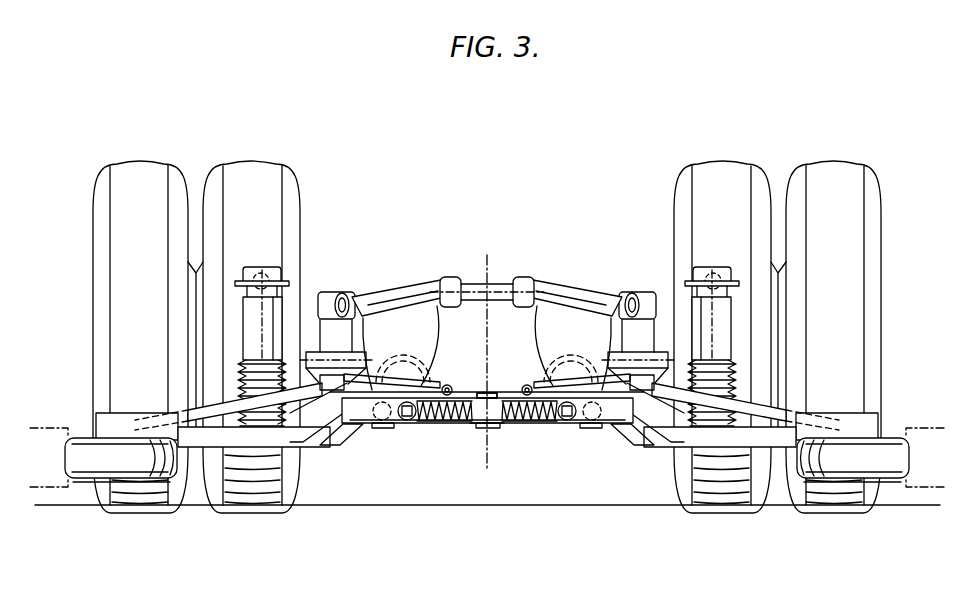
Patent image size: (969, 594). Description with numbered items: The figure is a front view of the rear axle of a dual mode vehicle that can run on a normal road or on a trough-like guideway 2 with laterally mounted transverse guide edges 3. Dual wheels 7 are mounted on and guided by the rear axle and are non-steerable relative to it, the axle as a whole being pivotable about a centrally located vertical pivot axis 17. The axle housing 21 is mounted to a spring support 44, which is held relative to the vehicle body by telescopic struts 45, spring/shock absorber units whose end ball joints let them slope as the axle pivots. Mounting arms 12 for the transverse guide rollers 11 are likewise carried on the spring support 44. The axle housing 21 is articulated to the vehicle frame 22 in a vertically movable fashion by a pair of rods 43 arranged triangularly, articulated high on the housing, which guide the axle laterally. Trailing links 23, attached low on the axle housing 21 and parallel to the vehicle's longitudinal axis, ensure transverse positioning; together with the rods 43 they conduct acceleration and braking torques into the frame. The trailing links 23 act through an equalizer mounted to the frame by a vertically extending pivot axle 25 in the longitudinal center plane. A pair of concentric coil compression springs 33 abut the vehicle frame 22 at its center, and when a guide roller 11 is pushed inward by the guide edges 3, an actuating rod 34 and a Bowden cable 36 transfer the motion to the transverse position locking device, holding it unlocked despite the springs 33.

The guideway 2 is at (565, 496).
The transverse guide edges 3 is at (62, 423).
The dual wheels 7 is at (223, 183).
The transverse guide roller 11 is at (76, 462).
The mounting arms 12 is at (782, 448).
The central pivot axis 17 is at (487, 450).
The pivot axle 25 is at (448, 442).
The axle housing 21 is at (580, 300).
The vehicle frame 22 is at (503, 427).
The trailing links 23 is at (372, 358).
The coil compression springs 33 is at (535, 427).
The actuating rod 34 is at (187, 415).
The Bowden cable 36 is at (443, 375).
The pair of rods 43 is at (639, 276).
The spring support 44 is at (337, 447).
The telescopic strut 45 is at (248, 330).